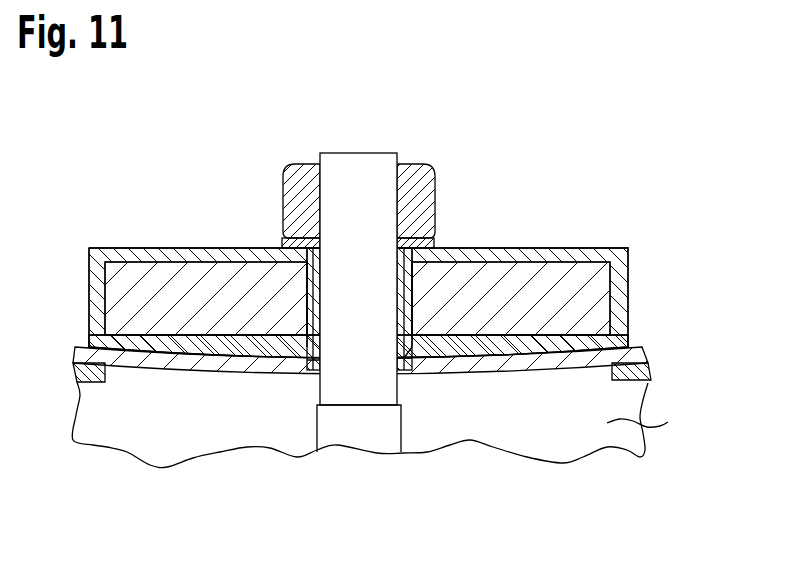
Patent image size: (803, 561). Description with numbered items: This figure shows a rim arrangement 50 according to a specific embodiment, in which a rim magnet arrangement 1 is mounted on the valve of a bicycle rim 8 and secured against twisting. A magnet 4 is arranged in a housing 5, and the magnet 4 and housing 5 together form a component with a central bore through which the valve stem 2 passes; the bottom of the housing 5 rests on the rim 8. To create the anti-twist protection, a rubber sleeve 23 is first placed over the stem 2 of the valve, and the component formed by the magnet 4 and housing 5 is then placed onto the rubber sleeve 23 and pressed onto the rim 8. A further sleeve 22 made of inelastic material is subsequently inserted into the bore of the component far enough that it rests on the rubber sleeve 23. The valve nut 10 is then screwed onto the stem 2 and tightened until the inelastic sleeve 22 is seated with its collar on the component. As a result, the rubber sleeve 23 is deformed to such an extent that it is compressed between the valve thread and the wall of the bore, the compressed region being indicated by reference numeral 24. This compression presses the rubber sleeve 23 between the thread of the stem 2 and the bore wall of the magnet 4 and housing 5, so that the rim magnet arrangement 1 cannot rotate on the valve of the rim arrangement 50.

The rim magnet arrangement 1 is at (634, 99).
The valve stem 2 is at (357, 181).
The magnet 4 is at (598, 320).
The housing 5 is at (622, 262).
The rim 8 is at (607, 423).
The valve nut 10 is at (426, 203).
The inelastic sleeve 22 is at (428, 242).
The rubber sleeve 23 is at (406, 362).
The compressed region of the rubber sleeve 24 is at (314, 357).
The rim arrangement 50 is at (676, 128).